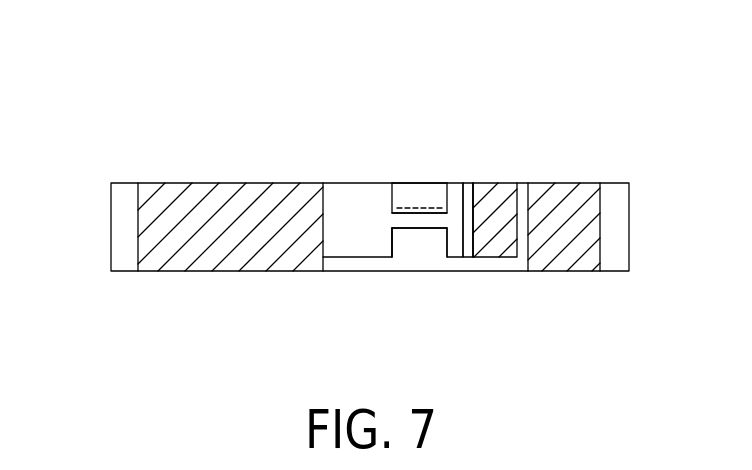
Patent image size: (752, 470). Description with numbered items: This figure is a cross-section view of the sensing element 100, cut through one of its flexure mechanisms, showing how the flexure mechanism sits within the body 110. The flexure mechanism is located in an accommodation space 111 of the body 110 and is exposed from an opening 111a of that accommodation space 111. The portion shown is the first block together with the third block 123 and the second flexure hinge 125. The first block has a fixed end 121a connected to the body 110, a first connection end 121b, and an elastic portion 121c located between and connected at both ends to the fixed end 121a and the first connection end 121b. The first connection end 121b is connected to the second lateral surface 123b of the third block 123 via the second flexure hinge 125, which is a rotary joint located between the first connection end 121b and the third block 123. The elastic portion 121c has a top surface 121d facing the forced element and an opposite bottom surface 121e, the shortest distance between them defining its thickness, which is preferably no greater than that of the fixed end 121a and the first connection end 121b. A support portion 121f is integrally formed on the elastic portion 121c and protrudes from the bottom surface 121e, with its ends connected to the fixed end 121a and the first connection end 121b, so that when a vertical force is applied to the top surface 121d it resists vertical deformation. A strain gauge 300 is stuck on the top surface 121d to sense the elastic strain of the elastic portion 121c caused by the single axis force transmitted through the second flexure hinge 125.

The sensing element 100 is at (99, 81).
The body 110 is at (185, 255).
The accommodation space 111 is at (522, 252).
The opening 111a is at (403, 183).
The fixed end 121a is at (337, 197).
The first connection end 121b is at (453, 196).
The elastic portion 121c is at (407, 220).
The top surface 121d is at (417, 207).
The bottom surface 121e is at (428, 229).
The support portion 121f is at (410, 229).
The third block 123 is at (502, 203).
The second lateral surface 123b is at (473, 231).
The second flexure hinge 125 is at (467, 245).
The strain gauge 300 is at (400, 208).